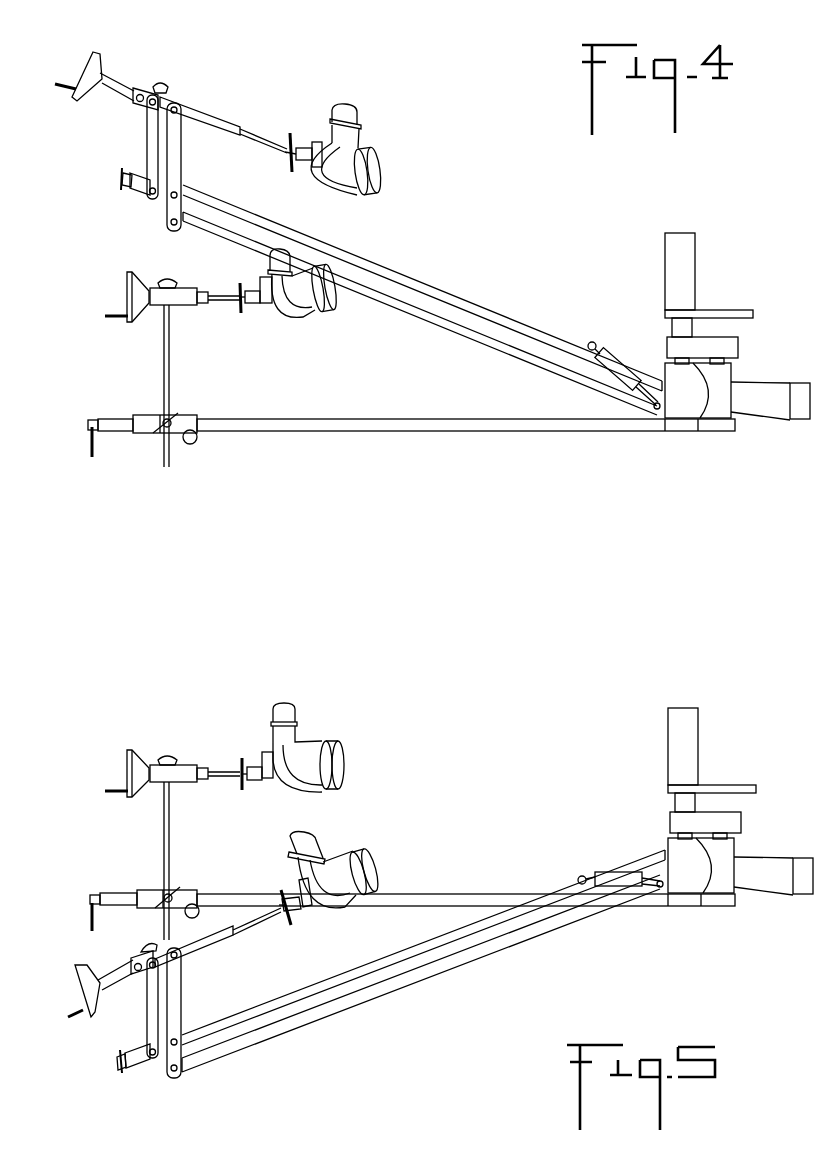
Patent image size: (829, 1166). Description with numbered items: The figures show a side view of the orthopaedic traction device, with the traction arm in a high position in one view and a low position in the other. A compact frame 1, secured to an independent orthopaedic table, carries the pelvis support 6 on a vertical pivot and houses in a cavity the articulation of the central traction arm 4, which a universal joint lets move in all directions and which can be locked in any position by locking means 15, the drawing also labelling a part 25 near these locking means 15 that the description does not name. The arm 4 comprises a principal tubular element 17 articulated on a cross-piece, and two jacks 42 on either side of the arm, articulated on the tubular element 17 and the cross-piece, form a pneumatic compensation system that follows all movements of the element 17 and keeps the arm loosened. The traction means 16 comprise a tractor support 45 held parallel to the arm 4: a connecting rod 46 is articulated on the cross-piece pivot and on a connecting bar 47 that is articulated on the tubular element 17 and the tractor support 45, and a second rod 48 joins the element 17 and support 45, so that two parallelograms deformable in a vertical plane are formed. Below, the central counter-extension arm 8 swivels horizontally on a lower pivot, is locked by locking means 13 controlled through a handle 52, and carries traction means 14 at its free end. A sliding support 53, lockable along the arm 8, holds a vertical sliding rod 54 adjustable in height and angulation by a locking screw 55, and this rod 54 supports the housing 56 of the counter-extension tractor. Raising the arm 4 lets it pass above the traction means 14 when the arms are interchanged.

In FIG. 4, the frame 1 is at (768, 390).
In FIG. 5, the frame 1 is at (765, 856).
In FIG. 4, the central traction arm 4 is at (406, 281).
In FIG. 5, the central traction arm 4 is at (333, 978).
In FIG. 4, the pelvis support 6 is at (704, 263).
In FIG. 5, the pelvis support 6 is at (704, 755).
In FIG. 4, the central counter-extension arm 8 is at (463, 434).
In FIG. 5, the central counter-extension arm 8 is at (441, 892).
In FIG. 4, the locking means 13 is at (106, 443).
In FIG. 5, the locking means 13 is at (84, 909).
In FIG. 4, the traction means 14 is at (113, 302).
In FIG. 5, the traction means 14 is at (114, 767).
In FIG. 4, the locking means 15 is at (129, 196).
In FIG. 5, the locking means 15 is at (137, 1073).
In FIG. 4, the traction means 16 is at (105, 62).
In FIG. 5, the traction means 16 is at (82, 1021).
In FIG. 4, the principal tubular element 17 is at (482, 311).
In FIG. 5, the principal tubular element 17 is at (407, 952).
In FIG. 4, the nut 25 is at (127, 171).
In FIG. 5, the nut 25 is at (130, 1070).
In FIG. 4, the jacks 42 is at (610, 360).
In FIG. 5, the jacks 42 is at (618, 876).
In FIG. 4, the tractor support 45 is at (173, 98).
In FIG. 4, the connecting rod 46 is at (433, 323).
In FIG. 5, the connecting rod 46 is at (408, 981).
In FIG. 4, the connecting bar 47 is at (180, 162).
In FIG. 5, the connecting bar 47 is at (177, 1003).
In FIG. 4, the second rod 48 is at (149, 140).
In FIG. 5, the second rod 48 is at (150, 1010).
In FIG. 4, the handle 52 is at (87, 435).
In FIG. 4, the sliding support 53 is at (145, 416).
In FIG. 4, the vertical sliding rod 54 is at (171, 363).
In FIG. 4, the locking screw 55 is at (173, 414).
In FIG. 4, the housing 56 is at (187, 289).